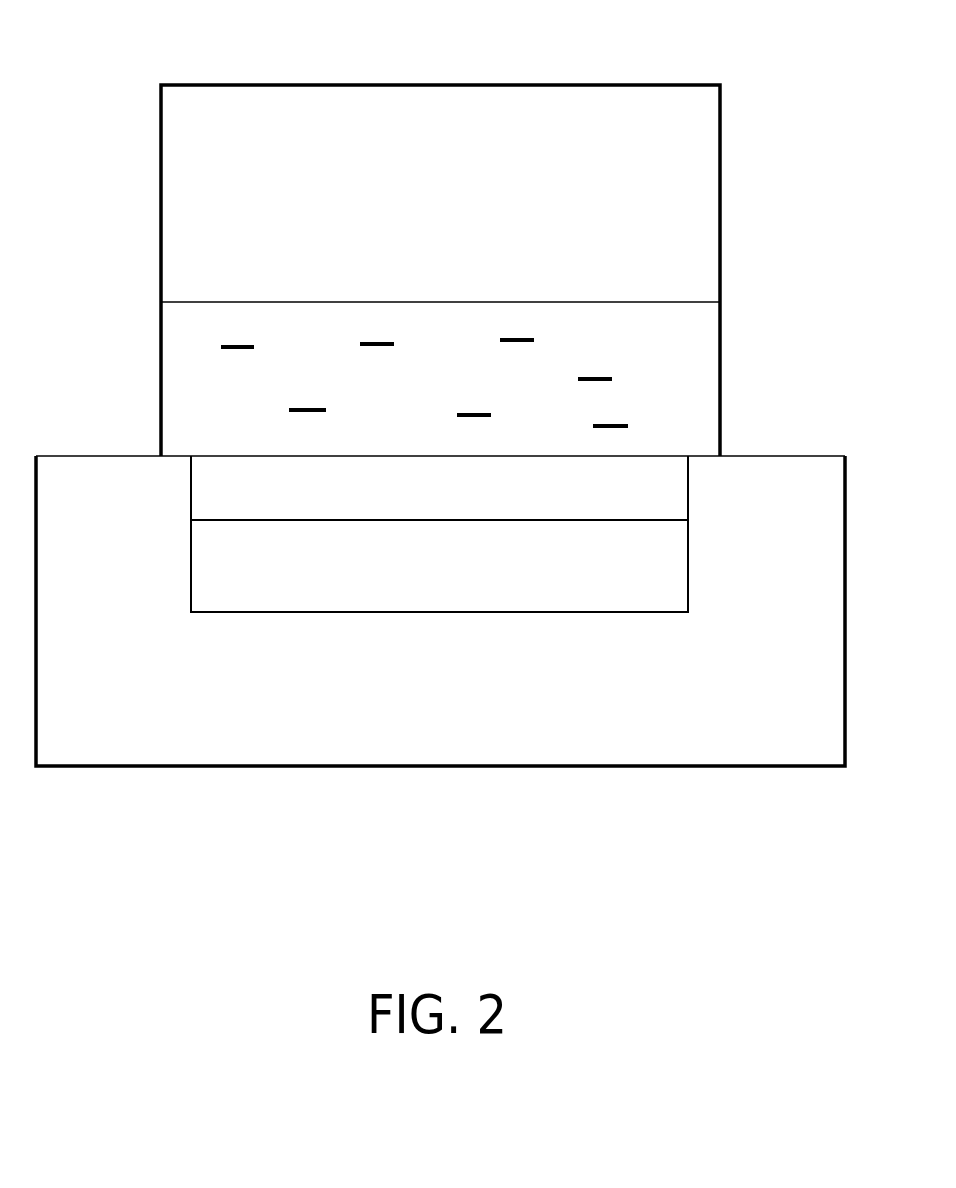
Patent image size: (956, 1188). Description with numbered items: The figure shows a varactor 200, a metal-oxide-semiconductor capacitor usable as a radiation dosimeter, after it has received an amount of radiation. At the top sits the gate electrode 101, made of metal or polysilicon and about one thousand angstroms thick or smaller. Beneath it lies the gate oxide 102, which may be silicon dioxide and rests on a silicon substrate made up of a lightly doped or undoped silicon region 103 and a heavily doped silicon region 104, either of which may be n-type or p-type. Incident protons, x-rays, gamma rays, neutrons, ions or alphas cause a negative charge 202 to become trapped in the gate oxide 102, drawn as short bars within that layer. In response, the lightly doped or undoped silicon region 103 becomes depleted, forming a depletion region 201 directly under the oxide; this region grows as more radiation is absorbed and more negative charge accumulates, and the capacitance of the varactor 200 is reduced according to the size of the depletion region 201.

The varactor 200 is at (119, 31).
The gate electrode 101 is at (458, 202).
The gate oxide 102 is at (458, 390).
The negative charge 202 is at (612, 422).
The depletion region 201 is at (458, 497).
The lightly doped or undoped silicon region 103 is at (456, 578).
The heavily doped silicon region 104 is at (458, 696).